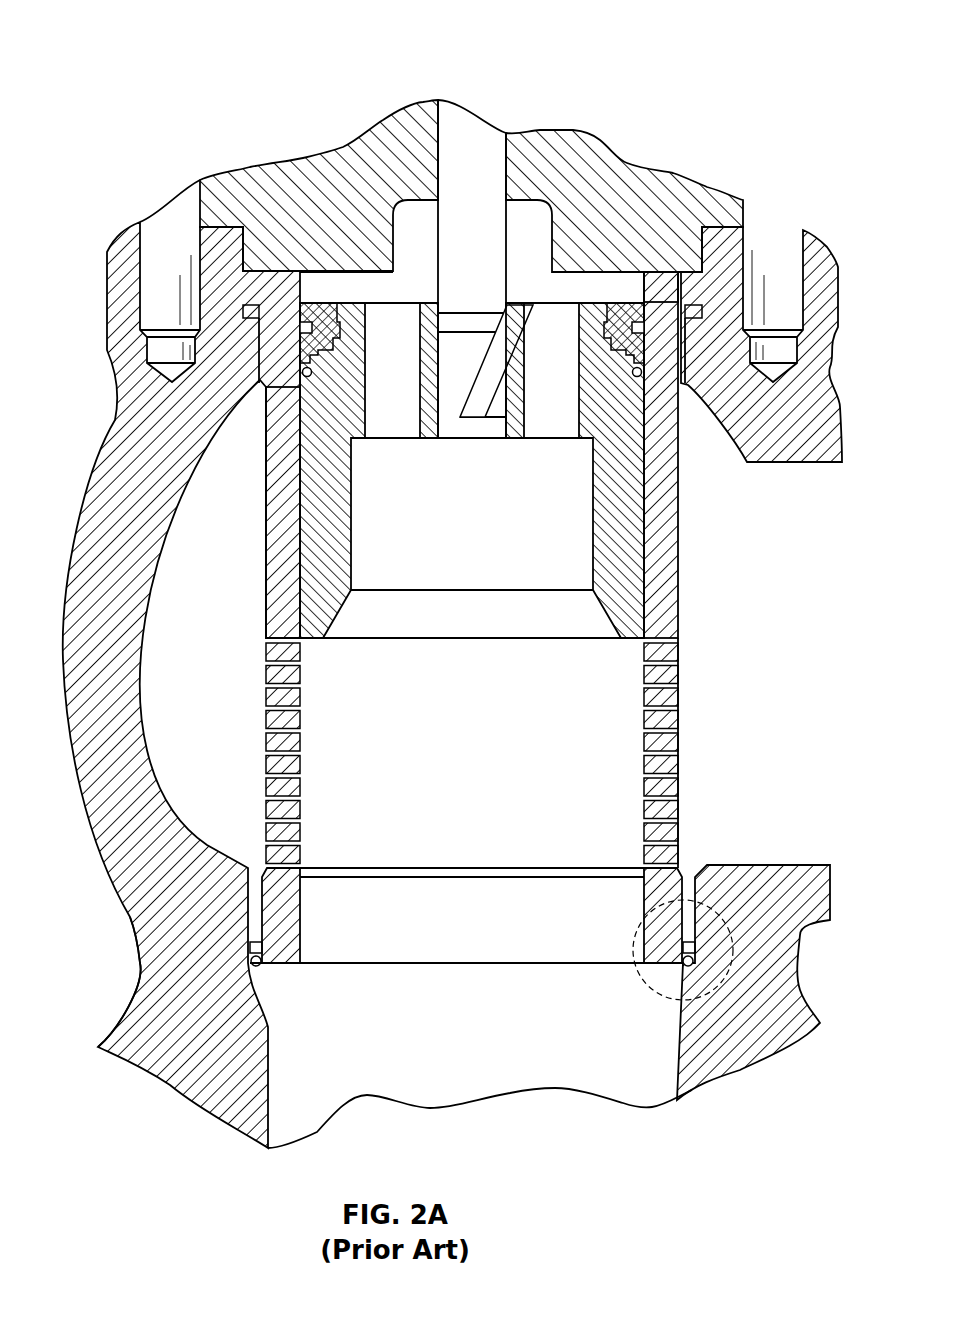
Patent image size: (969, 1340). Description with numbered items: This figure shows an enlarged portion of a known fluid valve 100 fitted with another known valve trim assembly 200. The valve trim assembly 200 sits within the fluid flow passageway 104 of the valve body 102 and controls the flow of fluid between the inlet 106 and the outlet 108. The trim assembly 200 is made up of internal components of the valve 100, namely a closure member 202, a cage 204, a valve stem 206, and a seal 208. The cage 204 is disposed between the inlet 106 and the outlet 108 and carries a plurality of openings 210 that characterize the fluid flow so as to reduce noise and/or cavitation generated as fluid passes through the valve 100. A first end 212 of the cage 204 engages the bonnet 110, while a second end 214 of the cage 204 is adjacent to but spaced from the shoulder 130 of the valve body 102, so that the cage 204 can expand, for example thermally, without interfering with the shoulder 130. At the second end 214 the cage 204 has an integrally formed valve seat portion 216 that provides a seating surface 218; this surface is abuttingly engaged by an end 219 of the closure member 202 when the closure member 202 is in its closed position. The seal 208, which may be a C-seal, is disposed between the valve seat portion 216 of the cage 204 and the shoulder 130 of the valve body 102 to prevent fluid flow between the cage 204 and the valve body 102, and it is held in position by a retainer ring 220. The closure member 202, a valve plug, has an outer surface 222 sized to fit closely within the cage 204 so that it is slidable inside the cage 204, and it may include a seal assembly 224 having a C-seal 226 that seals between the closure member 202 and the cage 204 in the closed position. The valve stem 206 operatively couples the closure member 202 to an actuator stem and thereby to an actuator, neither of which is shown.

The fluid valve 100 is at (193, 34).
The valve body 102 is at (230, 1107).
The fluid flow passageway 104 is at (487, 1040).
The inlet 106 is at (127, 1067).
The outlet 108 is at (780, 865).
The bonnet 110 is at (583, 143).
The shoulder 130 is at (259, 968).
The valve trim assembly 200 is at (696, 596).
The closure member 202 is at (630, 574).
The cage 204 is at (272, 585).
The valve stem 206 is at (467, 127).
The seal 208 is at (250, 963).
The openings 210 is at (293, 733).
The first end 212 is at (667, 280).
The second end 214 is at (290, 963).
The valve seat portion 216 is at (290, 907).
The seating surface 218 is at (305, 870).
The end 219 is at (316, 641).
The retainer ring 220 is at (684, 952).
The outer surface 222 is at (300, 568).
The seal assembly 224 is at (321, 282).
The C-seal 226 is at (302, 372).